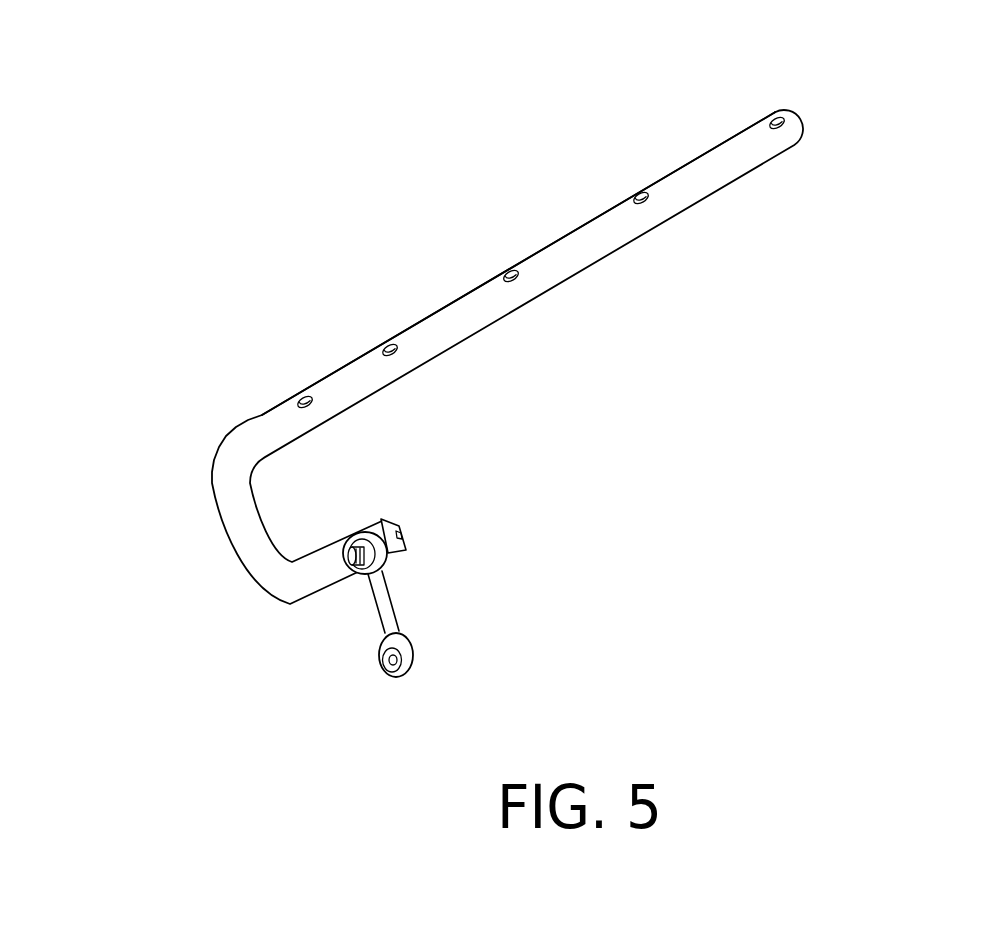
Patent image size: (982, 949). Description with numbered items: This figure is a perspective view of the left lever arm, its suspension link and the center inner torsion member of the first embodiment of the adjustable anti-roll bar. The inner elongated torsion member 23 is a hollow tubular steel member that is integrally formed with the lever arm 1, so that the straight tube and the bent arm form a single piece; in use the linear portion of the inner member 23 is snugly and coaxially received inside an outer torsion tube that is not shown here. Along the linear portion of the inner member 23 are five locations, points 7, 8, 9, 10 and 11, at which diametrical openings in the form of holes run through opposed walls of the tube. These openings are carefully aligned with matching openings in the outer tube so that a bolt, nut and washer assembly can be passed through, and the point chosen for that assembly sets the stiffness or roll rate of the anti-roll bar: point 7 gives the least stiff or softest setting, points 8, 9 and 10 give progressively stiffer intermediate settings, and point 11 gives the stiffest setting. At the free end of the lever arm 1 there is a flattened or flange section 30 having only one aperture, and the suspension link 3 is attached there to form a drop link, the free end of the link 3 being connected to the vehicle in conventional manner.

The lever arm 1 is at (245, 538).
The suspension link 3 is at (384, 614).
The point 7 is at (768, 117).
The point 8 is at (635, 190).
The point 9 is at (505, 274).
The point 10 is at (385, 344).
The point 11 is at (302, 397).
The inner elongated torsion member 23 is at (477, 305).
The flange section 30 is at (393, 550).